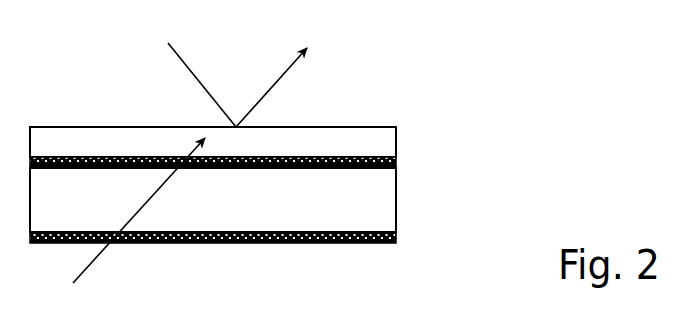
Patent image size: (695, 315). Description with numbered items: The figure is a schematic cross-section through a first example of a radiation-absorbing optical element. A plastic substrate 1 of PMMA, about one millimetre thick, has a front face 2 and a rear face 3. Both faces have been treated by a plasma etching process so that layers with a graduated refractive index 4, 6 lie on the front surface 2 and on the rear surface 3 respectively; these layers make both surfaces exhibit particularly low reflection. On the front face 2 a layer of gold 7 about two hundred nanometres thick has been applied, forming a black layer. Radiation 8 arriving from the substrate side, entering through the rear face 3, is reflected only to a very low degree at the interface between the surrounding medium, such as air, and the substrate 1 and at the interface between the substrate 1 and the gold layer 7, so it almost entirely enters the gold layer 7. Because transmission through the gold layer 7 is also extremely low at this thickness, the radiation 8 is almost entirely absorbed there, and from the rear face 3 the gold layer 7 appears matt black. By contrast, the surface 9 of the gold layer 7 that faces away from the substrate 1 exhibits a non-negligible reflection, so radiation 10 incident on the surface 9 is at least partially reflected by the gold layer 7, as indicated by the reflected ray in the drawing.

The plastic substrate 1 is at (385, 206).
The front face 2 is at (325, 158).
The rear face 3 is at (268, 243).
The layer with a graduated refractive index 4 is at (396, 163).
The layer with a graduated refractive index 6 is at (396, 240).
The layer of gold 7 is at (383, 140).
The radiation 8 is at (97, 257).
The surface of the gold layer 9 is at (118, 126).
The radiation 10 is at (200, 78).